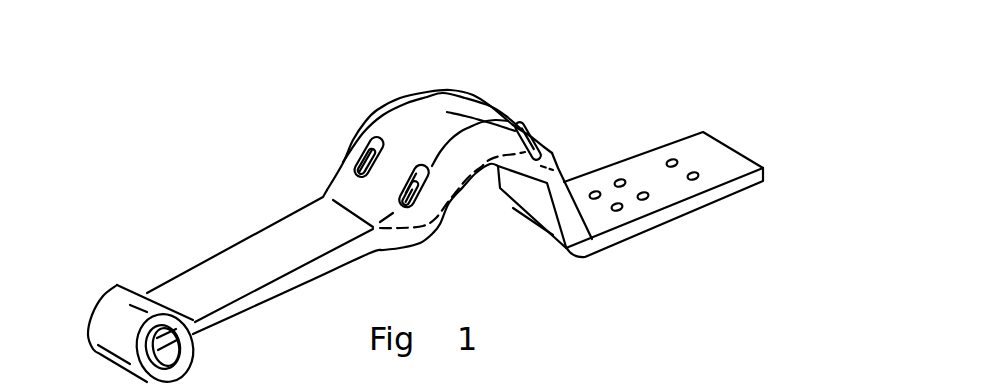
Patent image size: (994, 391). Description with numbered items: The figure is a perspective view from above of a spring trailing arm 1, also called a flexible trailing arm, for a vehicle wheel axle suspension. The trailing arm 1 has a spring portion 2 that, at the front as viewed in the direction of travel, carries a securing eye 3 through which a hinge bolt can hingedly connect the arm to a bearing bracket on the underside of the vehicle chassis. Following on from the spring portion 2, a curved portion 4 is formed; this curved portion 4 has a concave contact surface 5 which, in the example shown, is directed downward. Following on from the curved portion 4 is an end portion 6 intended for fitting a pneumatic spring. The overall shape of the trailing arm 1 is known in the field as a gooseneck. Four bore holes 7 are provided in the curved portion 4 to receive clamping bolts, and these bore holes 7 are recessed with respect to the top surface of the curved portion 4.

The spring trailing arm 1 is at (377, 88).
The spring portion 2 is at (262, 247).
The securing eye 3 is at (113, 303).
The curved portion 4 is at (447, 112).
The concave contact surface 5 is at (483, 187).
The end portion 6 is at (692, 189).
The bore holes 7 is at (360, 157).